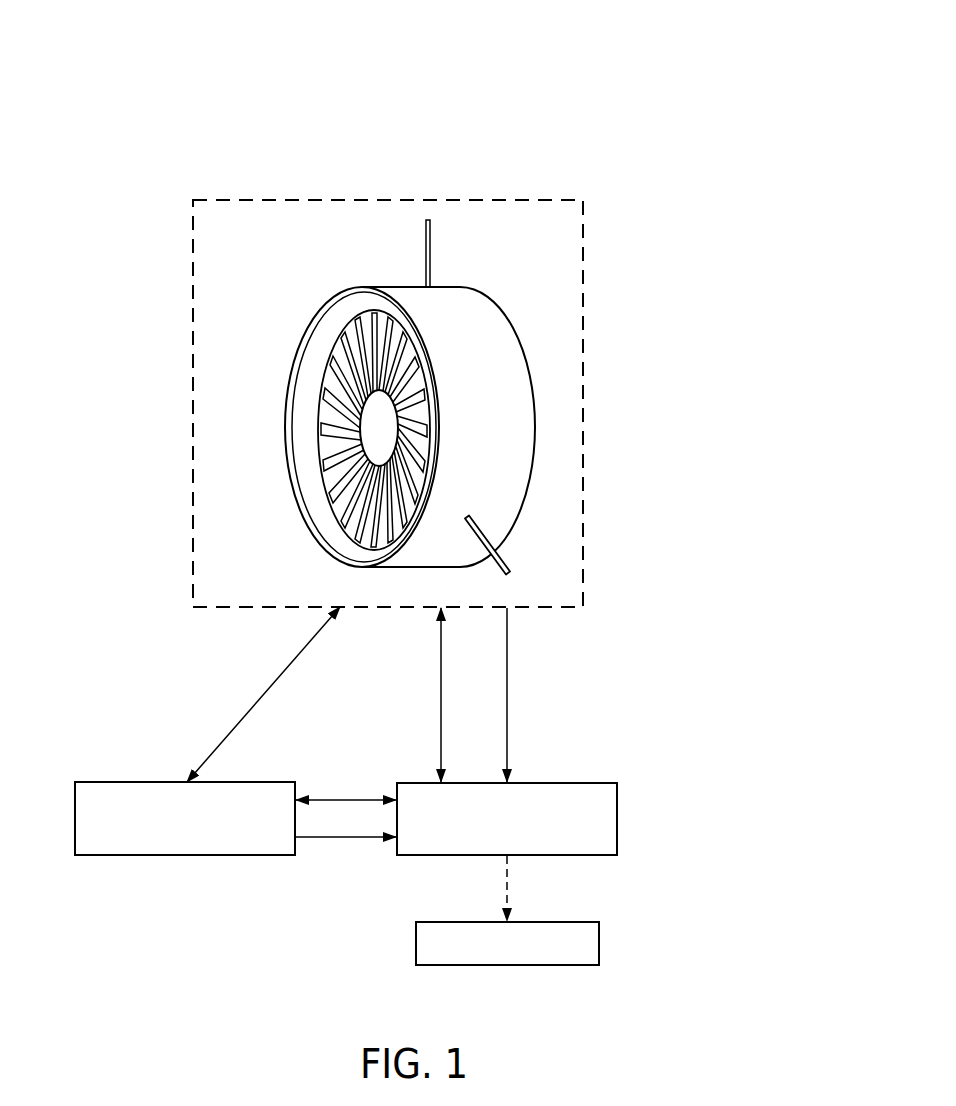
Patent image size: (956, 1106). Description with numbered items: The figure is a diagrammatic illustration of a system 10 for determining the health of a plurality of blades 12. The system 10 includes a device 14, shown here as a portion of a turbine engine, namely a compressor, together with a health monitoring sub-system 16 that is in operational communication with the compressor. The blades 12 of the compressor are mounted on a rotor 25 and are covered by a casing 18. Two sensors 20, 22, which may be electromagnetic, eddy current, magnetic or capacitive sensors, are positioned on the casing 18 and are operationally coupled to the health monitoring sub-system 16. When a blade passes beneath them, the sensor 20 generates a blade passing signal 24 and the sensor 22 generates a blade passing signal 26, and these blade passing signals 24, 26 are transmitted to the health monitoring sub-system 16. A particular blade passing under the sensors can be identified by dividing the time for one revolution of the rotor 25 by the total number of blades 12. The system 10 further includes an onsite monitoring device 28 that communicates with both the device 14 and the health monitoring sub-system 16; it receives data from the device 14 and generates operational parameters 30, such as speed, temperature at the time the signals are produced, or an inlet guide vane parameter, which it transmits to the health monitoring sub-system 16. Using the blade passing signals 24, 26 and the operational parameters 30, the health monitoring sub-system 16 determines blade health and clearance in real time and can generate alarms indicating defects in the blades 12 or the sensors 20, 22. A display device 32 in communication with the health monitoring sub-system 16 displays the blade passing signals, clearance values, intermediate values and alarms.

The system 10 is at (135, 63).
The blades 12 is at (336, 368).
The device 14 is at (585, 370).
The health monitoring sub-system 16 is at (617, 815).
The casing 18 is at (500, 318).
The sensor 20 is at (426, 243).
The sensor 22 is at (507, 551).
The blade passing signal 24 is at (567, 695).
The rotor 25 is at (373, 427).
The blade passing signal 26 is at (507, 680).
The onsite monitoring device 28 is at (103, 782).
The operational parameters 30 is at (345, 837).
The display device 32 is at (599, 942).